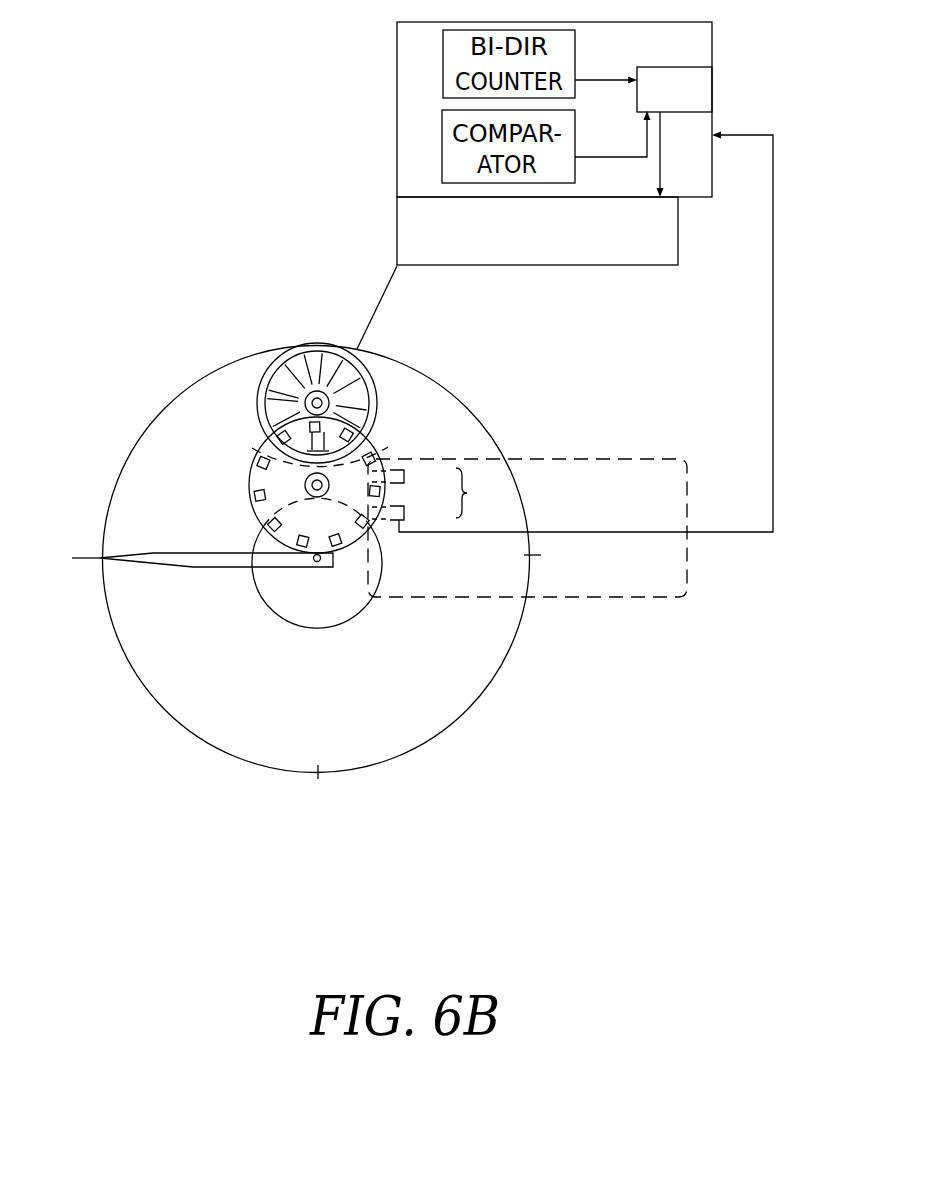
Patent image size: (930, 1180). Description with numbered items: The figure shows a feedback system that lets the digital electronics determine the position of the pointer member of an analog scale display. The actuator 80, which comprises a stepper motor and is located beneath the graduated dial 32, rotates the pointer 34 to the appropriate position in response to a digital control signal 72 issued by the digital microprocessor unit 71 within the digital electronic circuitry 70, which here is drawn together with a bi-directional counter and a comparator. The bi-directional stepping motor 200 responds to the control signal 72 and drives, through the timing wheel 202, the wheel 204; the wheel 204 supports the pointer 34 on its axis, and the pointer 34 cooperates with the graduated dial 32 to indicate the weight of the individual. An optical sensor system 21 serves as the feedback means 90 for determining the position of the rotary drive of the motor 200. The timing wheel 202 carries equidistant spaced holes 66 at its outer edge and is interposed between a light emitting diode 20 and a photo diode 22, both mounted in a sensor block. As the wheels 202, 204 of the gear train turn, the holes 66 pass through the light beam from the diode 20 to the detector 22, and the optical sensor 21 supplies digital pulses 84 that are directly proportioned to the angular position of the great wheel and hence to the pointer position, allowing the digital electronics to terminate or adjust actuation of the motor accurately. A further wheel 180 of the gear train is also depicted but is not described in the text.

The light emitting diode 20 is at (404, 477).
The optical sensor system 21 is at (479, 493).
The photo diode 22 is at (404, 513).
The graduated dial 32 is at (153, 702).
The pointer 34 is at (208, 553).
The equidistant spaced holes 66 is at (257, 453).
The digital electronic circuitry 70 is at (505, 265).
The digital microprocessor unit 71 is at (712, 100).
The digital control signal 72 is at (371, 307).
The actuator 80 is at (243, 390).
The digital pulses 84 is at (586, 332).
The feedback means 90 is at (638, 459).
The drive gear 180 is at (317, 343).
The bi-directional stepping motor 200 is at (268, 367).
The timing wheel 202 is at (375, 448).
The wheel 204 is at (383, 553).